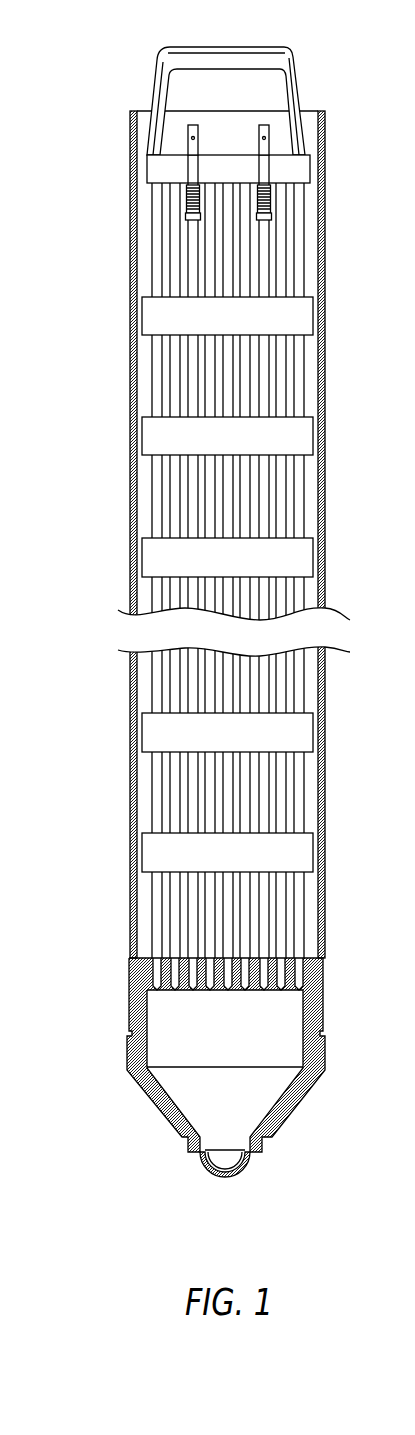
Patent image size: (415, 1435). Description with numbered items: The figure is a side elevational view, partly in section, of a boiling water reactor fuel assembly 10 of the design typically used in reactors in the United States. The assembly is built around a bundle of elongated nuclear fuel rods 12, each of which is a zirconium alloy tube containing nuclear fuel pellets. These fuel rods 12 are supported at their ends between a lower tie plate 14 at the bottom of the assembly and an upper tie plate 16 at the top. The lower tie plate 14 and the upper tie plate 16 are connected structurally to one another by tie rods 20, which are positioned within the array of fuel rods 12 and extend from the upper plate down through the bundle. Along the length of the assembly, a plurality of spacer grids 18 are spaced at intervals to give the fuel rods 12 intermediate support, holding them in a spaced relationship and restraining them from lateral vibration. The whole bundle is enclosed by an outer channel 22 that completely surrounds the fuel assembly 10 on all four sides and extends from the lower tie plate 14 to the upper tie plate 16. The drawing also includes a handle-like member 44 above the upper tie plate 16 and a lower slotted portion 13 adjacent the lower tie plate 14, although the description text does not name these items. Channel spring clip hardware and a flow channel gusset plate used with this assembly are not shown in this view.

The BWR fuel assembly 10 is at (80, 519).
The nuclear fuel rods 12 is at (155, 377).
The slotted base block 13 is at (170, 988).
The lower tie plate 14 is at (303, 1053).
The upper tie plate 16 is at (152, 170).
The spacer grids 18 is at (152, 315).
The tie rods 20 is at (192, 250).
The outer channel 22 is at (134, 797).
The handle 44 is at (294, 57).